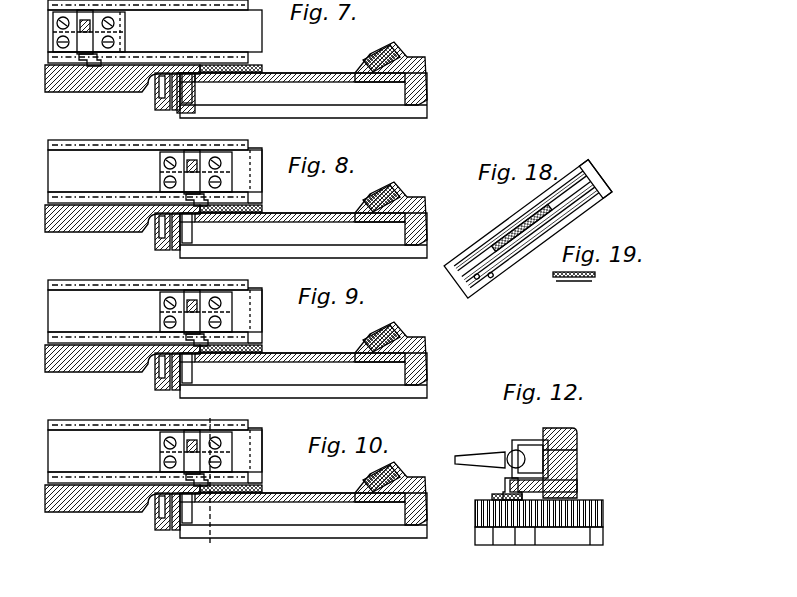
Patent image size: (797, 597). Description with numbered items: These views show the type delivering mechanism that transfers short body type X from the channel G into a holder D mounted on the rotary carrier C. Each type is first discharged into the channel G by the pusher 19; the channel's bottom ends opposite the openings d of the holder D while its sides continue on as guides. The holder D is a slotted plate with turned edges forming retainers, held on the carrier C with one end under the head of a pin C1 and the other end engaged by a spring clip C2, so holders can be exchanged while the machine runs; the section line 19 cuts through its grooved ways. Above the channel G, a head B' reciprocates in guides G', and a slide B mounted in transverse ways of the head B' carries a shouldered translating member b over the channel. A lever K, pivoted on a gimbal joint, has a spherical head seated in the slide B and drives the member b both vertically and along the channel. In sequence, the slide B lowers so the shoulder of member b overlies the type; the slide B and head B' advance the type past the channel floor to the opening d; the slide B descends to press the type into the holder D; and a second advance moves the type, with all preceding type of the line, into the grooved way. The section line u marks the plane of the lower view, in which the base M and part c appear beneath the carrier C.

In FIG. 7, the channel G is at (155, 36).
In FIG. 8, the channel G is at (155, 176).
In FIG. 9, the channel G is at (155, 318).
In FIG. 10, the channel G is at (155, 459).
In FIG. 12, the channel G is at (509, 497).
In FIG. 7, the guides G' is at (148, 33).
In FIG. 8, the guides G' is at (128, 171).
In FIG. 9, the guides G' is at (128, 311).
In FIG. 10, the guides G' is at (128, 451).
In FIG. 12, the guides G' is at (564, 414).
In FIG. 7, the lever K is at (89, 32).
In FIG. 8, the lever K is at (160, 170).
In FIG. 9, the lever K is at (160, 312).
In FIG. 10, the lever K is at (186, 452).
In FIG. 12, the lever K is at (482, 454).
In FIG. 7, the head B' is at (131, 32).
In FIG. 8, the head B' is at (245, 175).
In FIG. 9, the head B' is at (245, 315).
In FIG. 10, the head B' is at (250, 455).
In FIG. 12, the head B' is at (593, 463).
In FIG. 7, the slide B is at (142, 96).
In FIG. 8, the slide B is at (199, 164).
In FIG. 9, the slide B is at (234, 318).
In FIG. 10, the slide B is at (236, 447).
In FIG. 12, the slide B is at (522, 443).
In FIG. 7, the short body type X is at (97, 68).
In FIG. 8, the short body type X is at (258, 210).
In FIG. 9, the short body type X is at (258, 350).
In FIG. 10, the short body type X is at (258, 490).
In FIG. 18, the short body type X is at (530, 216).
In FIG. 12, the short body type X is at (500, 494).
In FIG. 7, the holder D is at (335, 73).
In FIG. 8, the holder D is at (337, 214).
In FIG. 9, the holder D is at (313, 356).
In FIG. 10, the holder D is at (324, 496).
In FIG. 18, the holder D is at (598, 203).
In FIG. 12, the holder D is at (477, 520).
In FIG. 7, the carrier C is at (303, 95).
In FIG. 8, the carrier C is at (290, 222).
In FIG. 9, the carrier C is at (290, 362).
In FIG. 10, the carrier C is at (288, 504).
In FIG. 12, the carrier C is at (588, 500).
In FIG. 7, the spring clip C2 is at (400, 48).
In FIG. 8, the spring clip C2 is at (396, 189).
In FIG. 9, the spring clip C2 is at (396, 329).
In FIG. 10, the spring clip C2 is at (394, 477).
In FIG. 7, the bracket C1 is at (163, 98).
In FIG. 8, the bracket C1 is at (165, 232).
In FIG. 9, the bracket C1 is at (147, 372).
In FIG. 10, the bracket C1 is at (160, 515).
In FIG. 7, the base M is at (122, 78).
In FIG. 8, the base M is at (152, 218).
In FIG. 9, the base M is at (155, 366).
In FIG. 10, the base M is at (155, 505).
In FIG. 12, the base M is at (497, 527).
In FIG. 7, the pin c is at (176, 91).
In FIG. 8, the pin c is at (176, 251).
In FIG. 9, the pin c is at (168, 374).
In FIG. 10, the pin c is at (170, 530).
In FIG. 7, the translating member b is at (55, 62).
In FIG. 8, the translating member b is at (200, 244).
In FIG. 9, the translating member b is at (206, 366).
In FIG. 10, the translating member b is at (206, 500).
In FIG. 12, the translating member b is at (508, 480).
In FIG. 10, the section line u- u is at (207, 482).
In FIG. 18, the opening d is at (470, 292).
In FIG. 18, the pusher 19 is at (486, 226).